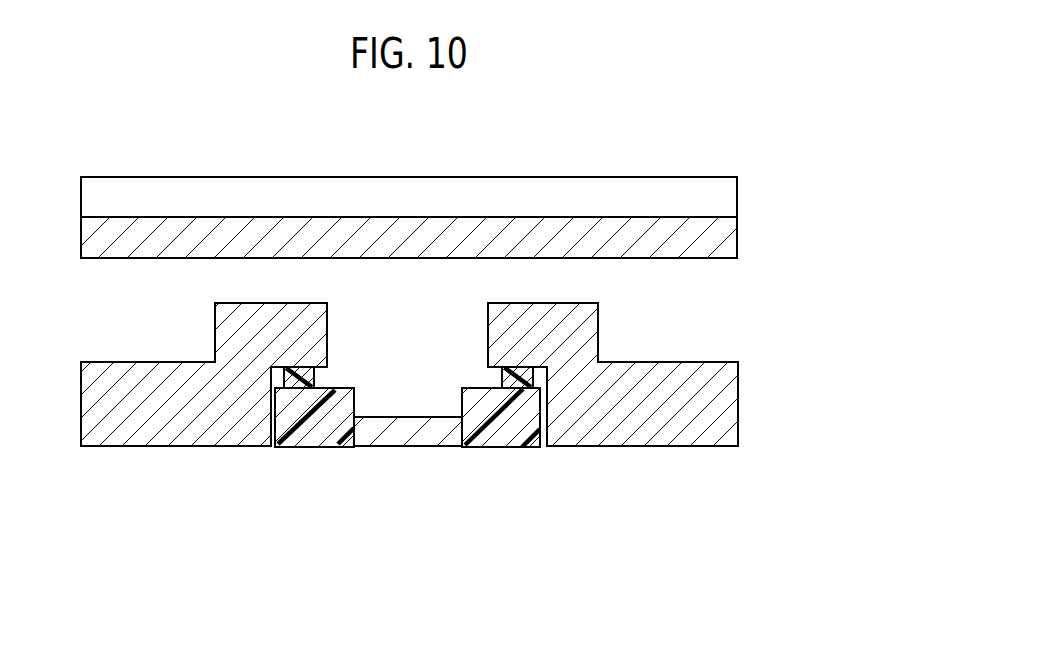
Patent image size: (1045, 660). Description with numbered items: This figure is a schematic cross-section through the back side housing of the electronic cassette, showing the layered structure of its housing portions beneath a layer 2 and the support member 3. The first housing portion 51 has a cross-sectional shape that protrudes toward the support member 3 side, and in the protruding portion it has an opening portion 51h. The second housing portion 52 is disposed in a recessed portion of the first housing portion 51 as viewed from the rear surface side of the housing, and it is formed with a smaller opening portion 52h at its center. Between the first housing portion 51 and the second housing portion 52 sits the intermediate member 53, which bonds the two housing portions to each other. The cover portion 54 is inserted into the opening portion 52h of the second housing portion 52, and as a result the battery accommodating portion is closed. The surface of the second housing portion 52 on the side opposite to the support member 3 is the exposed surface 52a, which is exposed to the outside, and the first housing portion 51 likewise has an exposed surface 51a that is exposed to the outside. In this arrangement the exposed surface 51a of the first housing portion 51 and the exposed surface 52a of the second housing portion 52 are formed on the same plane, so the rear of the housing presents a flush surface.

The substrate 2 is at (728, 198).
The support member 3 is at (728, 248).
The first housing portion 51 is at (94, 440).
The exposed surface 51a is at (202, 447).
The opening portion 51h is at (488, 316).
The second housing portion 52 is at (354, 393).
The exposed surface 52a is at (318, 447).
The opening portion 52h is at (357, 417).
The intermediate member 53 is at (316, 376).
The cover portion 54 is at (400, 438).